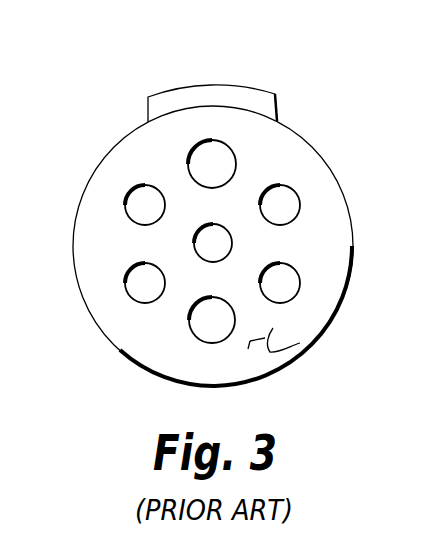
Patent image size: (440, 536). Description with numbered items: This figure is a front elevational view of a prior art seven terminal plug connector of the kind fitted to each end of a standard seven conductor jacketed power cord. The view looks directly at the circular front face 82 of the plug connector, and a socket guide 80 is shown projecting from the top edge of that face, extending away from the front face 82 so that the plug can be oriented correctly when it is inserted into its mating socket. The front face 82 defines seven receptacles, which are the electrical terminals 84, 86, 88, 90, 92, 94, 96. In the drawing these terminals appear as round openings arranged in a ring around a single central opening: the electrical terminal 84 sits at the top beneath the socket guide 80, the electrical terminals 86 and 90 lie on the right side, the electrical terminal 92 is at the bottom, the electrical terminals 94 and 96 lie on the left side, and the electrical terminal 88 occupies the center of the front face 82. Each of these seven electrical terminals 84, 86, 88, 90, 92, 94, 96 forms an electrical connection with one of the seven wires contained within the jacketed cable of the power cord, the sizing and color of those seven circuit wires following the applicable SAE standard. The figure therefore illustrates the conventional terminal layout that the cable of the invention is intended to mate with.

The socket guide 80 is at (230, 86).
The front face 82 is at (307, 346).
The electrical terminal 84 is at (238, 167).
The electrical terminal 86 is at (300, 208).
The electrical terminal 88 is at (245, 262).
The electrical terminal 90 is at (288, 302).
The electrical terminal 92 is at (212, 343).
The electrical terminal 94 is at (133, 300).
The electrical terminal 96 is at (131, 191).